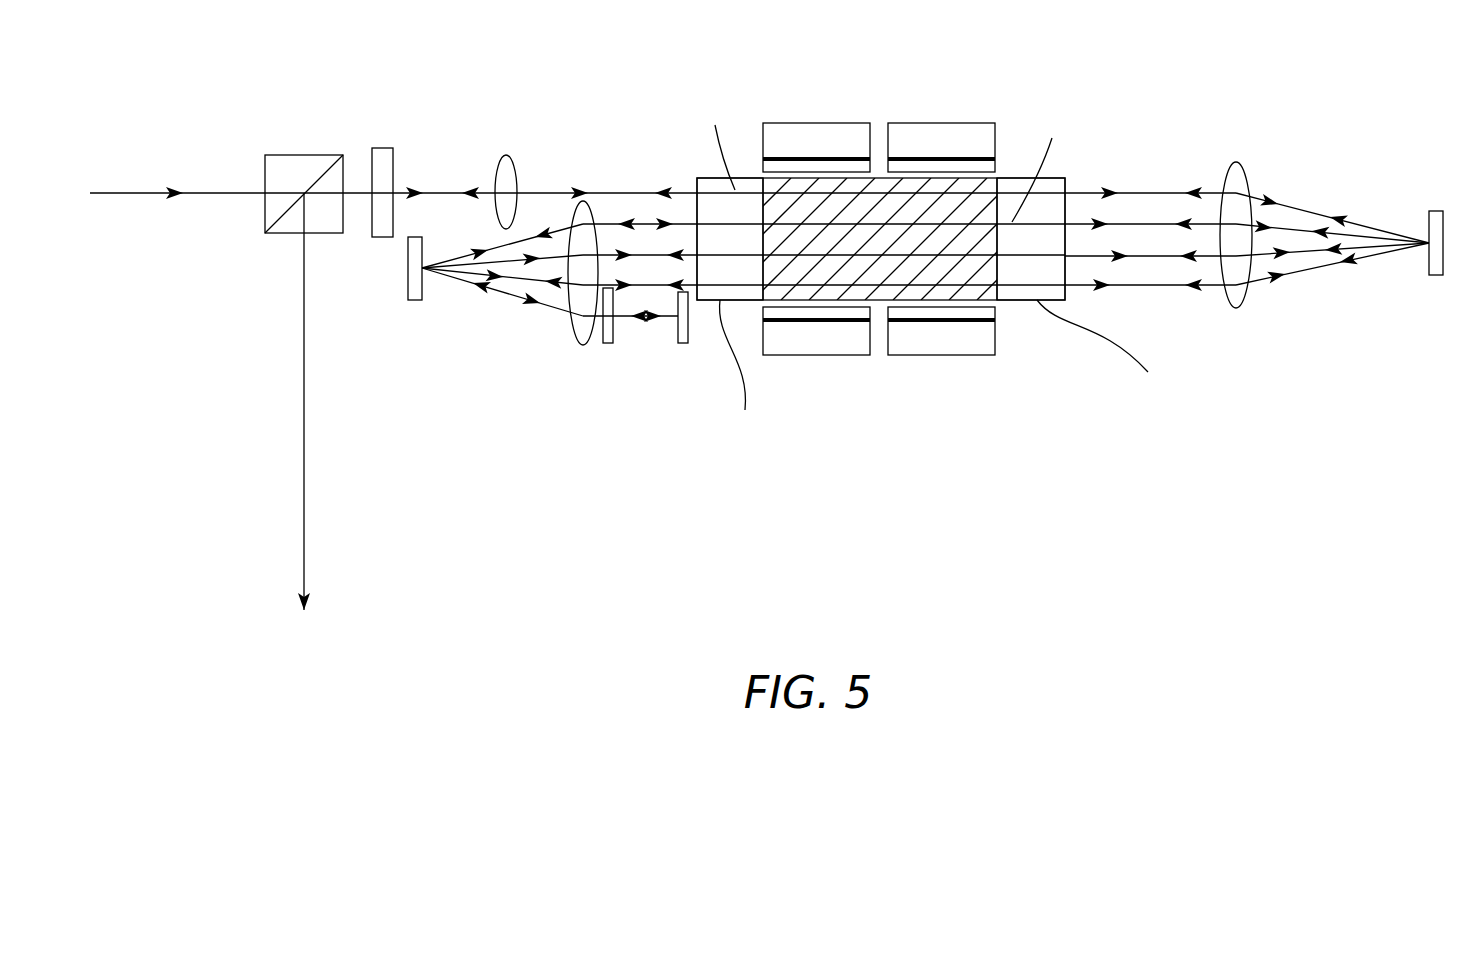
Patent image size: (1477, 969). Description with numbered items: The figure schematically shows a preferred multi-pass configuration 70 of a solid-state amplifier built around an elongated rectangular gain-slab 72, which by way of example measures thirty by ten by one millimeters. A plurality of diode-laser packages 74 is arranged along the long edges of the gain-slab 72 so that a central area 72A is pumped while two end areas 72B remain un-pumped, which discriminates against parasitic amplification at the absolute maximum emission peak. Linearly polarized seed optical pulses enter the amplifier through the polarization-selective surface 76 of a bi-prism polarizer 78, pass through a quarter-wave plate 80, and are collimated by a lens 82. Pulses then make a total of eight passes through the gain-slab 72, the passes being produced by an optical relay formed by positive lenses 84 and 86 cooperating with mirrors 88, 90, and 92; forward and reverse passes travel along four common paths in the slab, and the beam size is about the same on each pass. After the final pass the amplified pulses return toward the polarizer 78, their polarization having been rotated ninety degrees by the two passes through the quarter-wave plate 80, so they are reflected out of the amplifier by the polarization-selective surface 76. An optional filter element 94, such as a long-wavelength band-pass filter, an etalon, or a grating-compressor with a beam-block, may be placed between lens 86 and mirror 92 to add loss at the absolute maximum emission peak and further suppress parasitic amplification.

The multi-pass configuration of solid-state amplifier 70 is at (766, 334).
The gain-slab 72 is at (884, 294).
The pumped area of gain-slab 72A is at (848, 251).
The un-pumped areas of gain-slab 72B is at (752, 251).
The diode-laser packages 74 is at (843, 130).
The polarization-selective surface 76 is at (322, 172).
The bi-prism polarizer 78 is at (282, 237).
The quarter-wave plate 80 is at (388, 158).
The lens 82 is at (510, 172).
The positive lens 84 is at (1240, 180).
The positive lens 86 is at (572, 330).
The mirror 88 is at (1425, 260).
The mirror 90 is at (427, 293).
The mirror 92 is at (680, 335).
The filter element 94 is at (607, 342).